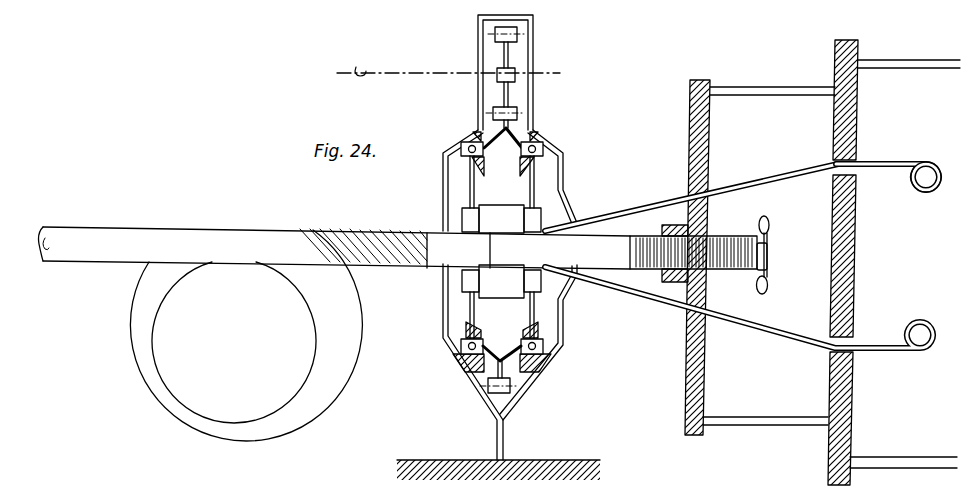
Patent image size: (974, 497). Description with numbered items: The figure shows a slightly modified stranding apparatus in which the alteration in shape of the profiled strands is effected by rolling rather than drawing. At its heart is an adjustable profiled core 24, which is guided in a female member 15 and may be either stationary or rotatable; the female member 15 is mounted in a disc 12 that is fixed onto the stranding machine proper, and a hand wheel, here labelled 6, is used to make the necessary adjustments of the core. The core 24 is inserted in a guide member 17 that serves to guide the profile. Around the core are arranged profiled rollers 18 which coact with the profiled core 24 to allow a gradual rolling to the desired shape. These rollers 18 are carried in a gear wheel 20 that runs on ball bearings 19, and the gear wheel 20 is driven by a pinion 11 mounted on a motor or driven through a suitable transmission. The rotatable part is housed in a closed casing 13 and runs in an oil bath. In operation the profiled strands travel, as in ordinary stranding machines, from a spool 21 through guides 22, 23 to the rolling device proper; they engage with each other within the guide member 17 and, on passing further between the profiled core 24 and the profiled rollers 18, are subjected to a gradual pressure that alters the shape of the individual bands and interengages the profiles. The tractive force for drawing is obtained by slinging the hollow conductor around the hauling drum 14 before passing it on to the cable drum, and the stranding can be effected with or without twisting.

The handle 6 is at (770, 255).
The pinion 11 is at (509, 47).
The disc 12 is at (704, 128).
The closed casing 13 is at (517, 117).
The hauling drum 14 is at (246, 335).
The female member 15 is at (693, 243).
The guide member 17 is at (546, 220).
The profiled rollers 18 is at (482, 220).
The ball bearings 19 is at (510, 237).
The gear wheel 20 is at (502, 363).
The spool 21 is at (926, 177).
The guide 22 is at (690, 197).
The guide 23 is at (838, 160).
The profiled core 24 is at (335, 248).